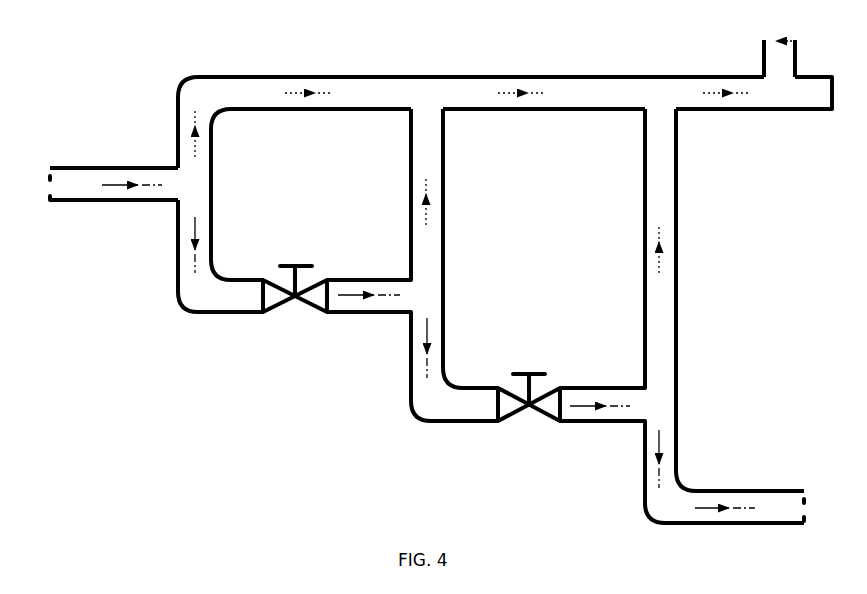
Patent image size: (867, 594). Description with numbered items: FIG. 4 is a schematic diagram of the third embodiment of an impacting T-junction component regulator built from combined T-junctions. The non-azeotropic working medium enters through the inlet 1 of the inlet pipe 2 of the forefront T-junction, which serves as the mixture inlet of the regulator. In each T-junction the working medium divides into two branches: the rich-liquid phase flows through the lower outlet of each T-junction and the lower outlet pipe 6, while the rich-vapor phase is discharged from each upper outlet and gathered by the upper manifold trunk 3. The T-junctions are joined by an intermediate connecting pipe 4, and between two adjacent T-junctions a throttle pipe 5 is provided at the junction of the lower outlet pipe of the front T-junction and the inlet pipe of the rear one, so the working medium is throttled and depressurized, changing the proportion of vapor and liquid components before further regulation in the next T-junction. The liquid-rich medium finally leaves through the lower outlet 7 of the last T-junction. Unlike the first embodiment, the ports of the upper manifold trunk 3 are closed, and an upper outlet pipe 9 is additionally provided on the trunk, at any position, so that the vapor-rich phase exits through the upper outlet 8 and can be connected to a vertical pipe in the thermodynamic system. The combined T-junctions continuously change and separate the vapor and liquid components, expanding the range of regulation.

The inlet 1 is at (50, 184).
The inlet pipe 2 is at (143, 166).
The upper manifold trunk 3 is at (479, 76).
The intermediate connecting pipe 4 is at (640, 265).
The throttle pipe 5 is at (306, 313).
The lower outlet pipe 6 is at (756, 490).
The lower outlet 7 is at (806, 506).
The upper outlet 8 is at (784, 43).
The upper outlet pipe 9 is at (758, 63).